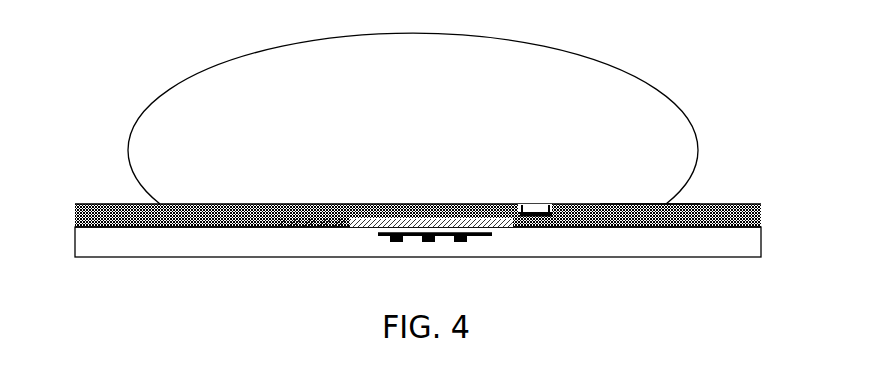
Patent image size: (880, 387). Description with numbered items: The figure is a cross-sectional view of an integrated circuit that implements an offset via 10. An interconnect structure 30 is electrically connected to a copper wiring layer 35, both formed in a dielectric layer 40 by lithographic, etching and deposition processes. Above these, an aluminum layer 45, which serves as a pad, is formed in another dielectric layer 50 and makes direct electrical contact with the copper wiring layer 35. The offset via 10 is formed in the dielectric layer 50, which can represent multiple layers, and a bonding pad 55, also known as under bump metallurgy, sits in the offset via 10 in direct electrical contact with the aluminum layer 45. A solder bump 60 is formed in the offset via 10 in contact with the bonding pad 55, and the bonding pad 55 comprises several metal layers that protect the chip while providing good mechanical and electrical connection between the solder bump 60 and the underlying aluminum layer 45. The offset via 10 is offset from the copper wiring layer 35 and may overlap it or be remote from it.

The offset via 10 is at (556, 216).
The interconnect structure 30 is at (453, 240).
The copper wiring layer 35 is at (377, 237).
The dielectric layer 40 is at (152, 237).
The aluminum layer 45 is at (295, 222).
The dielectric layer 50 is at (213, 227).
The bonding pad 55 is at (667, 208).
The solder bump 60 is at (157, 173).